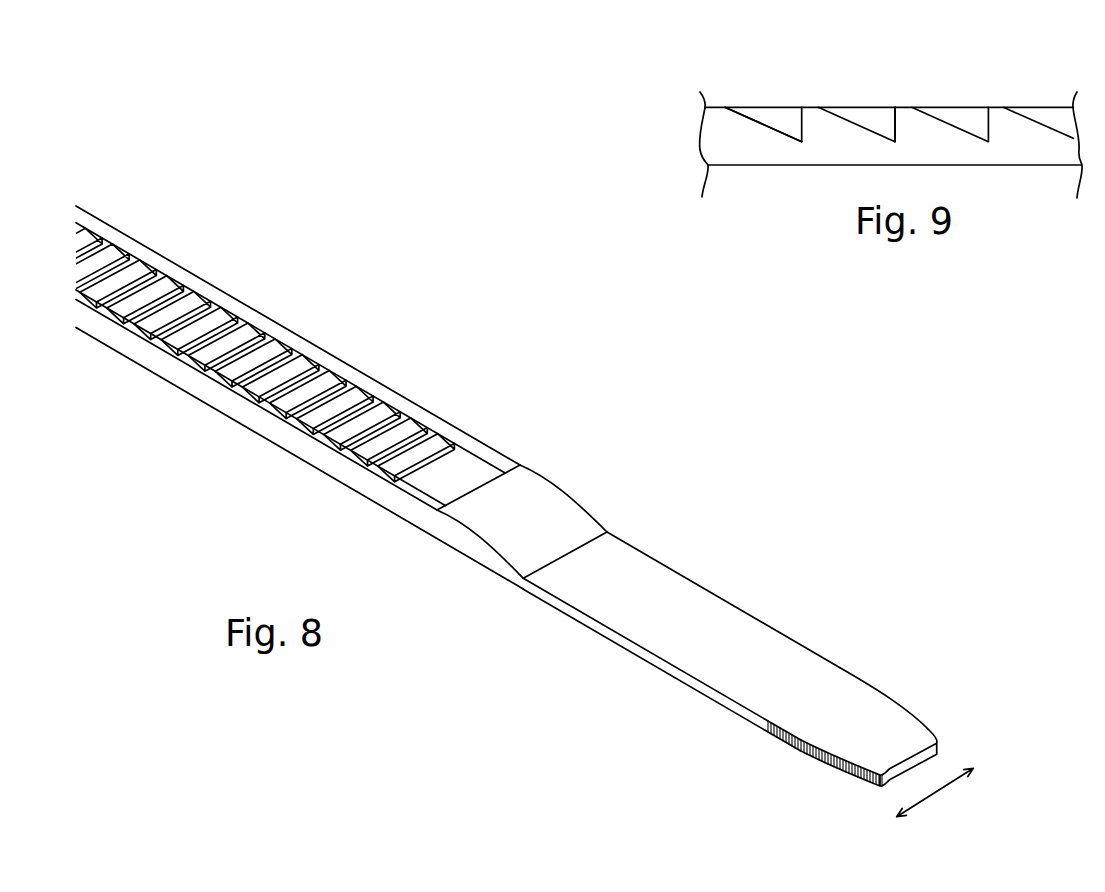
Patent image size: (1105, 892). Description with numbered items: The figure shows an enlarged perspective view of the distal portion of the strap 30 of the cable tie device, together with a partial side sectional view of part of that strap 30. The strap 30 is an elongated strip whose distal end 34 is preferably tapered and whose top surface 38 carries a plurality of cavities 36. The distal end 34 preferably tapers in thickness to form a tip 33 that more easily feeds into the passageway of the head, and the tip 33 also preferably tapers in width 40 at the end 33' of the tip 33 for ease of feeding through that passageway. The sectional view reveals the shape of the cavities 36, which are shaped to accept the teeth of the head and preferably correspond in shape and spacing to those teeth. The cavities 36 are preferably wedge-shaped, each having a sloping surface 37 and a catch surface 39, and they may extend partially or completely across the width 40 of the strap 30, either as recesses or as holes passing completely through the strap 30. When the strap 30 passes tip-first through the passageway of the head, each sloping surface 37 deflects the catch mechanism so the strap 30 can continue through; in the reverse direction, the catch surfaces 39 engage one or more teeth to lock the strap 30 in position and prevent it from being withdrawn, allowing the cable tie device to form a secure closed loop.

In FIG. 8, the strap 30 is at (430, 333).
In FIG. 8, the tip 33 is at (681, 641).
In FIG. 8, the end of tip 33' is at (873, 709).
In FIG. 8, the distal end 34 is at (408, 517).
In FIG. 8, the cavities 36 is at (237, 345).
In FIG. 9, the cavities 36 is at (968, 118).
In FIG. 9, the sloping surface 37 is at (753, 118).
In FIG. 8, the top surface 38 is at (460, 473).
In FIG. 9, the top surface 38 is at (718, 105).
In FIG. 9, the catch surface 39 is at (895, 118).
In FIG. 8, the width 40 is at (935, 793).